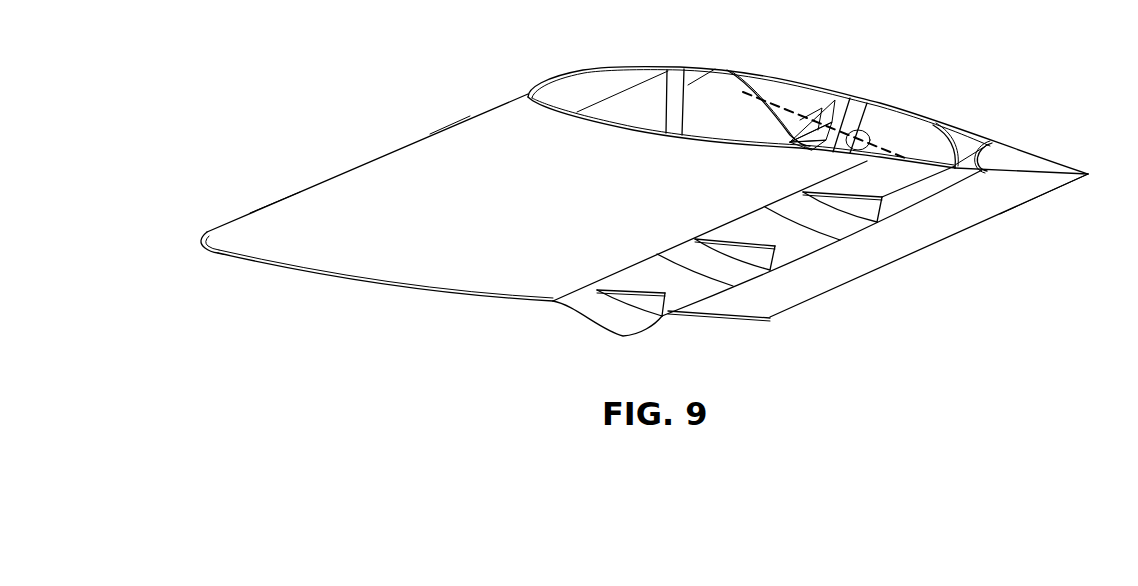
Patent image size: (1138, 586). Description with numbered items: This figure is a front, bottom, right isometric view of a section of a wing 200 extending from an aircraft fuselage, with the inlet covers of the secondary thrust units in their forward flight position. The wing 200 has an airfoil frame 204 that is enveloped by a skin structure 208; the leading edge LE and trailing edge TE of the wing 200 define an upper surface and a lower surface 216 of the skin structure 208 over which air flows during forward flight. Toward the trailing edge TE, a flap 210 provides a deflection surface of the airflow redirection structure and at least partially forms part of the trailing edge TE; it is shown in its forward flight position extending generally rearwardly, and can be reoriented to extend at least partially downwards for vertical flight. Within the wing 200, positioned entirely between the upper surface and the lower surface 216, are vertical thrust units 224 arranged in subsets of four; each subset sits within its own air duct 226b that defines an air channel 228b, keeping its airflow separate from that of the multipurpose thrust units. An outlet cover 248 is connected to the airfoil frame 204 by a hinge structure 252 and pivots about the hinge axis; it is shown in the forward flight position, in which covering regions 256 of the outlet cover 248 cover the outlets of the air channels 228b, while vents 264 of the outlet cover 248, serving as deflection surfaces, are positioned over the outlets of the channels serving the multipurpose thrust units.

The wing 200 is at (256, 77).
The leading edge LE is at (264, 191).
The trailing edge TE is at (994, 239).
The airfoil frame 204 is at (674, 110).
The skin structure 208 is at (427, 230).
The flap 210 is at (1022, 186).
The lower surface 216 is at (456, 266).
The vertical thrust unit 224 is at (805, 132).
The air duct 226b is at (733, 105).
The air channel 228b is at (907, 132).
The outlet cover 248 is at (782, 232).
The hinge structure 252 is at (639, 262).
The covering region 256 is at (906, 172).
The vent 264 is at (633, 302).